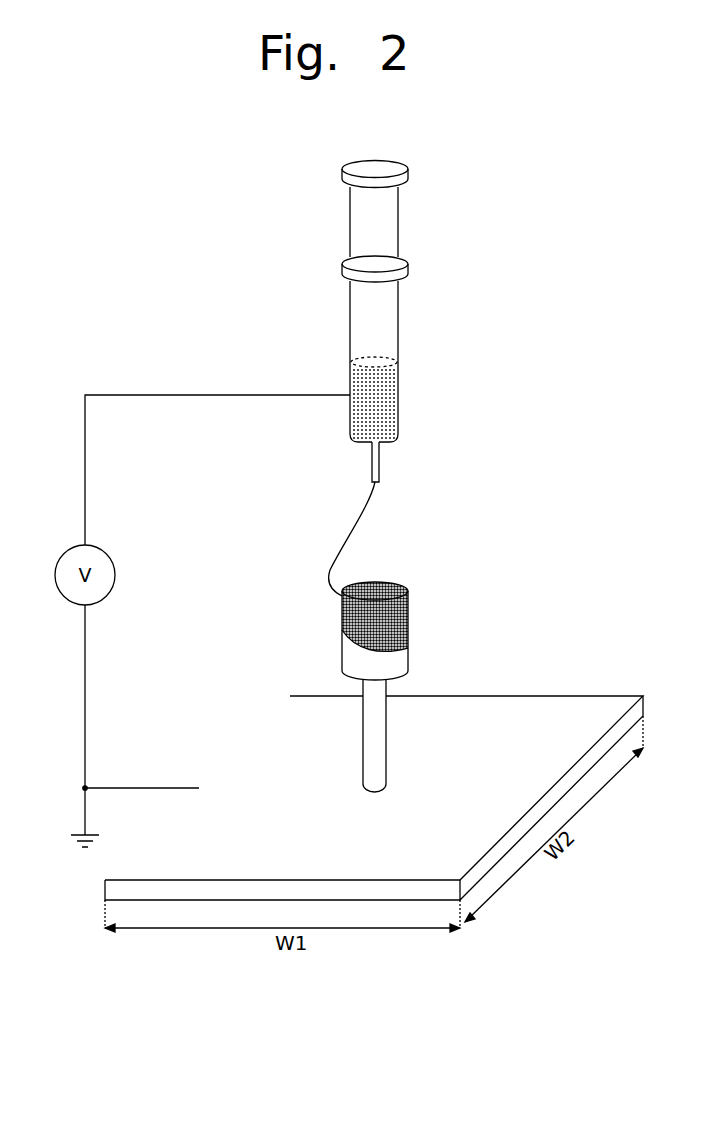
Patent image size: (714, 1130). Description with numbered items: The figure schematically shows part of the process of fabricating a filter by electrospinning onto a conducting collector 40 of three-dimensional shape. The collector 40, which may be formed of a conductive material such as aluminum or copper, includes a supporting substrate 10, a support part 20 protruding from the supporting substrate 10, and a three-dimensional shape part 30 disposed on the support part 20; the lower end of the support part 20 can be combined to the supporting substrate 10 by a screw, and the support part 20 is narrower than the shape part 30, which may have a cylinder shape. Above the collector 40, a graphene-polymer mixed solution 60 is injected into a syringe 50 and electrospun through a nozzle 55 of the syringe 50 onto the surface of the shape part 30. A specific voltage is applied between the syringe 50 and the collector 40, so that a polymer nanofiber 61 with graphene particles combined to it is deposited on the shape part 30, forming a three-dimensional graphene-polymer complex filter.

The supporting substrate 10 is at (297, 728).
The support part 20 is at (363, 722).
The three-dimensional shape part 30 is at (342, 653).
The collector 40 is at (218, 613).
The syringe 50 is at (398, 318).
The nozzle 55 is at (379, 458).
The graphene-polymer mixed solution 60 is at (388, 402).
The polymer nanofiber 61 is at (367, 518).